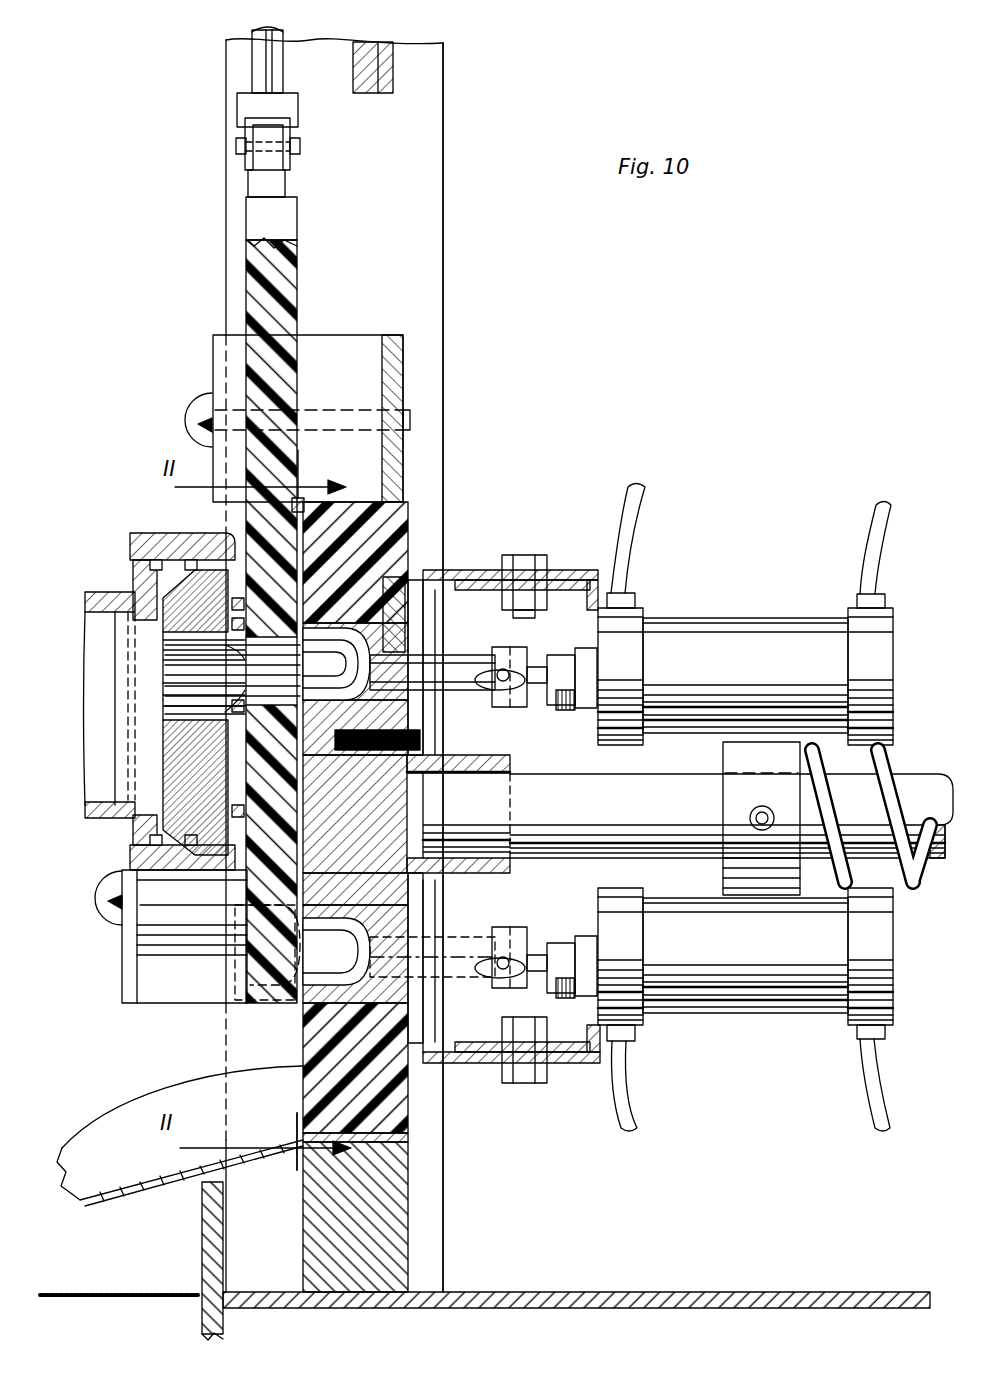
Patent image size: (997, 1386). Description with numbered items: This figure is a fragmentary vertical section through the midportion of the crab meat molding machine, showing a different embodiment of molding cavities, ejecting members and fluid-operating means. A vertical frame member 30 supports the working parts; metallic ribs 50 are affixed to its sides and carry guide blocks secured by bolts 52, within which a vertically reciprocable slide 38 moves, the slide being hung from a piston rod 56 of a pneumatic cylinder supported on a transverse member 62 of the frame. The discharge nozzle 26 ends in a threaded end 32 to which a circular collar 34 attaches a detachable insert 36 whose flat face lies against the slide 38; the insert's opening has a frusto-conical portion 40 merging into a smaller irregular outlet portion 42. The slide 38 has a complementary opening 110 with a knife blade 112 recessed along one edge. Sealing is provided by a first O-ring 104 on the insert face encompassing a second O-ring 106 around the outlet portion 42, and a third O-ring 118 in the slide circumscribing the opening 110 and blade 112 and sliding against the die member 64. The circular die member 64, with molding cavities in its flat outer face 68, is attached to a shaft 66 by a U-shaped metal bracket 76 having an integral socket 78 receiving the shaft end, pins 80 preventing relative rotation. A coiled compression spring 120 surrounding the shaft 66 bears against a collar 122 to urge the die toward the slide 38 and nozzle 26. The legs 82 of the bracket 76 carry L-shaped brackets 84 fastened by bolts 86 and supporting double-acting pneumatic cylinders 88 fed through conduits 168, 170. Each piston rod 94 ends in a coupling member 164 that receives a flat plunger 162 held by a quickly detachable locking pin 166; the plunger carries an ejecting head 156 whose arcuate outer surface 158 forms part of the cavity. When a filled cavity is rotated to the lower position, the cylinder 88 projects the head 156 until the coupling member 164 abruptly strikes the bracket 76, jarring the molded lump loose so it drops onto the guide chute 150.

The nozzle 26 is at (128, 592).
The vertical frame member 30 is at (420, 226).
The threaded end 32 is at (140, 825).
The circular collar 34 is at (140, 533).
The detachable insert 36 is at (170, 775).
The slide 38 is at (246, 292).
The frusto-conical portion 40 is at (165, 690).
The outlet portion 42 is at (205, 700).
The metallic ribs 50 is at (403, 368).
The bolts 52 is at (212, 393).
The piston rod 56 is at (270, 32).
The transverse member 62 is at (373, 42).
The die member 64 is at (408, 520).
The shaft 66 is at (628, 802).
The flat outer face 68 is at (303, 1048).
The metal bracket 76 is at (428, 1030).
The socket 78 is at (510, 765).
The pins 80 is at (446, 790).
The legs 82 is at (556, 570).
The L-shaped brackets 84 is at (600, 625).
The bolts 86 is at (534, 555).
The pneumatic cylinders 88 is at (736, 618).
The piston rods 94 is at (552, 706).
The first O-ring 104 is at (185, 533).
The second O-ring 106 is at (172, 628).
The opening 110 is at (396, 700).
The knife blade 112 is at (405, 580).
The third O-ring 118 is at (299, 490).
The coiled compression spring 120 is at (885, 762).
The collar 122 is at (723, 795).
The guide chute 150 is at (146, 1186).
The ejecting member head 156 is at (415, 660).
The arcuate outer surface 158 is at (374, 690).
The plunger 162 is at (492, 655).
The coupling member 164 is at (506, 710).
The locking pin 166 is at (476, 676).
The conduit 168 is at (645, 495).
The conduit 170 is at (866, 530).